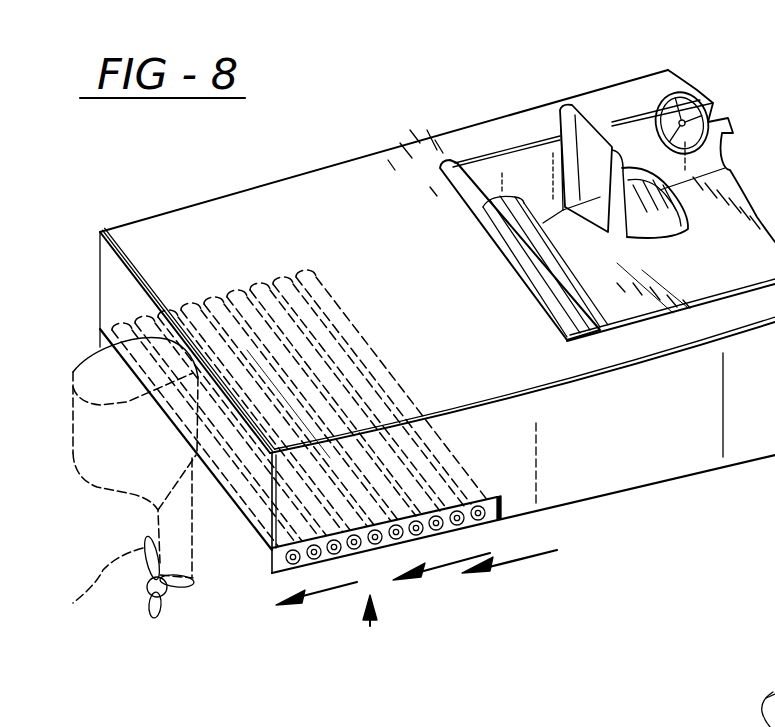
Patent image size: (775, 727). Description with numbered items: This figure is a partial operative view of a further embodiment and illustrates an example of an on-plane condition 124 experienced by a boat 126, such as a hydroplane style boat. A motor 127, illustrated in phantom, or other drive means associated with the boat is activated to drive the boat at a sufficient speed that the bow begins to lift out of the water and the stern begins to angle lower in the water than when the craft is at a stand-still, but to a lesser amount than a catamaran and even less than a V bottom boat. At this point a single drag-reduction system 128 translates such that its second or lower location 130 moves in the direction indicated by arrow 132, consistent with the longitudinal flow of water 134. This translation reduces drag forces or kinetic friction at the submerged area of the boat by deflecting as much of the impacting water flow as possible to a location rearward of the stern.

The on-plane condition 124 is at (185, 197).
The boat 126 is at (363, 165).
The motor 127 is at (93, 594).
The drag-reduction system 128 is at (370, 625).
The second (or lower) location 130 is at (280, 604).
The arrow 132 is at (323, 598).
The longitudinal flow of water 134 is at (433, 570).